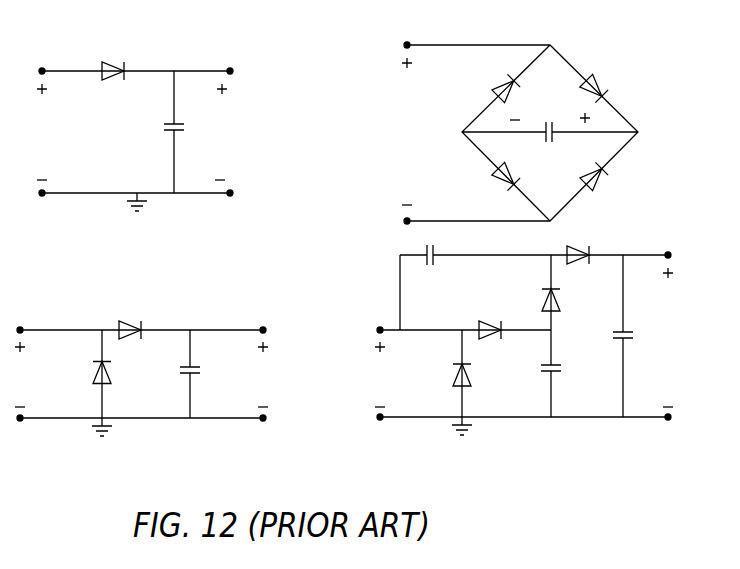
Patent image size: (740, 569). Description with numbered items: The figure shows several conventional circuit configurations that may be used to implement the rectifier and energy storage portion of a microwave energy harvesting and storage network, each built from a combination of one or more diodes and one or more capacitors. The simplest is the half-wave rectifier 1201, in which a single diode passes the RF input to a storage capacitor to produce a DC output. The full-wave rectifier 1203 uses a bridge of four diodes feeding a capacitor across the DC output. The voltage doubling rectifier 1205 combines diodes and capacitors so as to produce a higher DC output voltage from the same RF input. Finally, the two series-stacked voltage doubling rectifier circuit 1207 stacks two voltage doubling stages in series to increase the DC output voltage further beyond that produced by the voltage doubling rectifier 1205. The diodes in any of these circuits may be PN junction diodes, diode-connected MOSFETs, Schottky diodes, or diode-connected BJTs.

The half-wave rectifier 1201 is at (88, 241).
The full-wave rectifier 1203 is at (665, 84).
The voltage doubling rectifier 1205 is at (238, 309).
The two series-stacked voltage doubling rectifier circuit 1207 is at (385, 271).